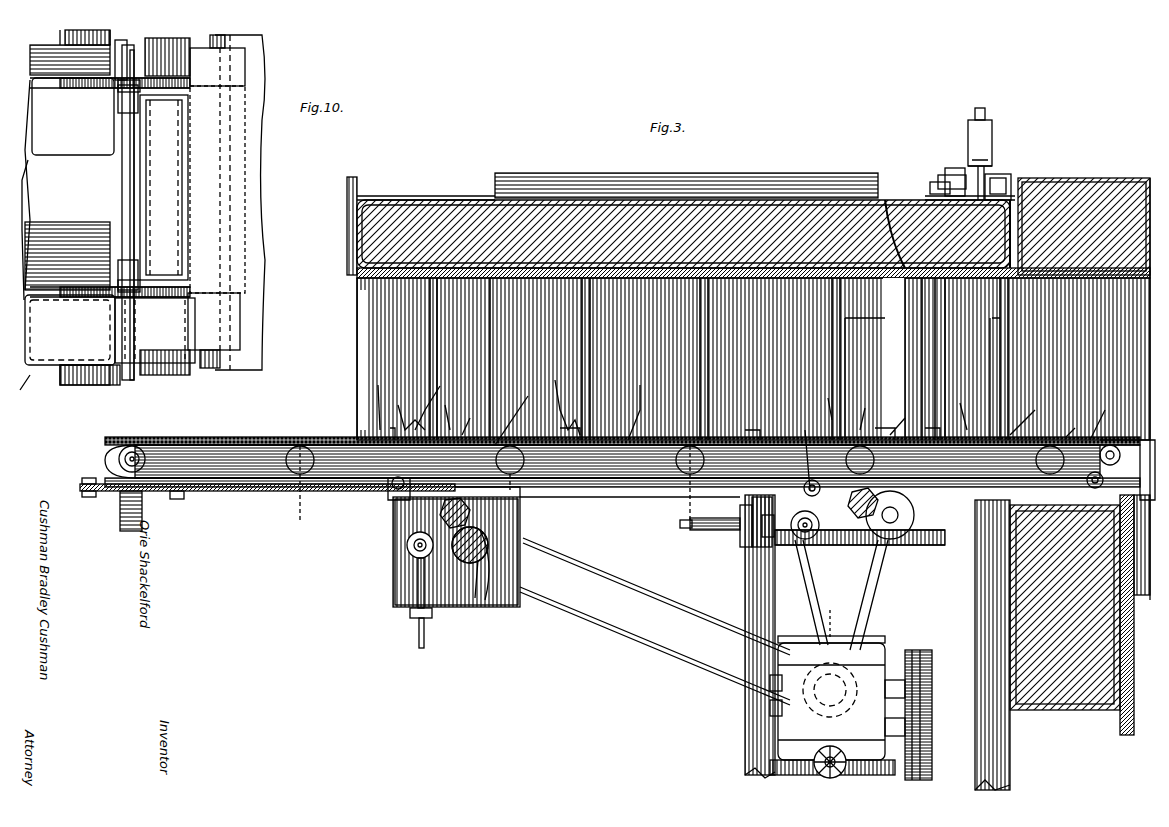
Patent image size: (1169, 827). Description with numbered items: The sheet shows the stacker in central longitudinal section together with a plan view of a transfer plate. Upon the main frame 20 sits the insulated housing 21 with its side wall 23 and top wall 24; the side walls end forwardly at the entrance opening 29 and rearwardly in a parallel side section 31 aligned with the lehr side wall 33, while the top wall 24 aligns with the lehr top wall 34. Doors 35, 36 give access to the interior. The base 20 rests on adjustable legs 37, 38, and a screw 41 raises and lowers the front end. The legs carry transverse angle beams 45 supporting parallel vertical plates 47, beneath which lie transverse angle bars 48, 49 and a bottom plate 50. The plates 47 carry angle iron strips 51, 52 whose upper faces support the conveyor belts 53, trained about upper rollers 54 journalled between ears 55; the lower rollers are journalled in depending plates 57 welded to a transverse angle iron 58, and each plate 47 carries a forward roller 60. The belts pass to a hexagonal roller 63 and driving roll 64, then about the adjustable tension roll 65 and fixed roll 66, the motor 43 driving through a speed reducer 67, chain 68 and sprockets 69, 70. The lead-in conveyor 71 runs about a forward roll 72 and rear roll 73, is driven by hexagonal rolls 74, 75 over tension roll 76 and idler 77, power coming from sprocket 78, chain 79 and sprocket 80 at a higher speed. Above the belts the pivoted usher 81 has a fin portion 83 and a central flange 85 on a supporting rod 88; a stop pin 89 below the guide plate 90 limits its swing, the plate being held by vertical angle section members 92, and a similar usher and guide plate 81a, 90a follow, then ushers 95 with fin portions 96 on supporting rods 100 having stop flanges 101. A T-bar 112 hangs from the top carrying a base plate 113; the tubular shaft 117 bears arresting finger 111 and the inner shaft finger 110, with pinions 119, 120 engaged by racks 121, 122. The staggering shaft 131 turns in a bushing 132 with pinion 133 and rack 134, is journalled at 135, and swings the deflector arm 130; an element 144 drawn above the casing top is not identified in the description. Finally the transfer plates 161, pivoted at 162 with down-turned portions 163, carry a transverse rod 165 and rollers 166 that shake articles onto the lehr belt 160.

In FIG. 3, the main frame 20 is at (275, 487).
In FIG. 3, the insulated housing 21 is at (390, 318).
In FIG. 3, the side wall 23 is at (770, 250).
In FIG. 3, the top wall 24 is at (440, 196).
In FIG. 3, the entrance opening 29 is at (357, 370).
In FIG. 3, the parallel side section 31 is at (905, 300).
In FIG. 3, the lehr side wall 33 is at (1085, 300).
In FIG. 3, the lehr top wall 34 is at (1080, 178).
In FIG. 3, the door 35 is at (636, 300).
In FIG. 3, the door 36 is at (860, 290).
In FIG. 3, the adjustable leg 37 is at (745, 715).
In FIG. 3, the adjustable leg 38 is at (1010, 755).
In FIG. 3, the screw 41 is at (145, 512).
In FIG. 3, the motor 43 is at (890, 650).
In FIG. 3, the transverse angle beam 45 is at (690, 522).
In FIG. 10, the vertical plate 47 is at (30, 230).
In FIG. 3, the vertical plate 47 is at (235, 487).
In FIG. 3, the transverse angle bar 48 is at (525, 515).
In FIG. 3, the transverse angle bar 49 is at (392, 492).
In FIG. 3, the bottom plate 50 is at (605, 497).
In FIG. 10, the angle iron strip 51 is at (45, 55).
In FIG. 10, the angle iron strip 52 is at (60, 145).
In FIG. 3, the angle iron strip 52 is at (262, 445).
In FIG. 3, the conveyor belt 53 is at (1103, 417).
In FIG. 10, the upper roller 54 is at (170, 220).
In FIG. 10, the ear 55 is at (150, 80).
In FIG. 3, the depending plate 57 is at (1100, 452).
In FIG. 10, the transverse angle iron 58 is at (90, 385).
In FIG. 3, the transverse angle iron 58 is at (1087, 478).
In FIG. 3, the roller 60 is at (757, 418).
In FIG. 3, the hexagonal roller 63 is at (880, 540).
In FIG. 3, the driving roll 64 is at (900, 540).
In FIG. 3, the tension roll 65 is at (803, 540).
In FIG. 3, the fixed roll 66 is at (808, 452).
In FIG. 3, the speed reducer 67 is at (890, 620).
In FIG. 3, the chain 68 is at (822, 600).
In FIG. 3, the sprocket 69 is at (839, 618).
In FIG. 3, the sprocket 70 is at (855, 520).
In FIG. 3, the lead-in conveyor 71 is at (225, 437).
In FIG. 3, the forward roll 72 is at (115, 452).
In FIG. 3, the rear roll 73 is at (518, 412).
In FIG. 3, the hexagonal roll 74 is at (478, 608).
In FIG. 3, the driving roll 75 is at (455, 608).
In FIG. 3, the tension roll 76 is at (405, 550).
In FIG. 3, the idler 77 is at (375, 490).
In FIG. 3, the sprocket 78 is at (730, 683).
In FIG. 3, the chain 79 is at (620, 630).
In FIG. 3, the sprocket 80 is at (488, 548).
In FIG. 3, the usher 81 is at (439, 400).
In FIG. 3, the usher 81a is at (562, 400).
In FIG. 3, the fin portion 83 is at (386, 400).
In FIG. 3, the central flange 85 is at (408, 409).
In FIG. 3, the supporting rod 88 is at (430, 346).
In FIG. 3, the stop pin 89 is at (453, 409).
In FIG. 3, the guide plate 90 is at (466, 419).
In FIG. 3, the guide plate 90a is at (641, 405).
In FIG. 3, the vertical angle section member 92 is at (492, 325).
In FIG. 3, the usher 95 is at (868, 411).
In FIG. 3, the fin portion 96 is at (828, 401).
In FIG. 3, the vertical supporting rod 100 is at (885, 357).
In FIG. 3, the stop flange 101 is at (900, 421).
In FIG. 3, the bottle arresting finger 110 is at (1000, 455).
In FIG. 3, the bottle arresting finger 111 is at (972, 409).
In FIG. 3, the T-bar 112 is at (930, 354).
In FIG. 3, the base plate 113 is at (960, 455).
In FIG. 3, the tubular shaft 117 is at (945, 358).
In FIG. 3, the pinion 119 is at (945, 180).
In FIG. 3, the pinion 120 is at (953, 175).
In FIG. 3, the rack 121 is at (962, 180).
In FIG. 3, the rack 122 is at (935, 185).
In FIG. 3, the deflector arm 130 is at (1080, 425).
In FIG. 3, the shaft 131 is at (1000, 370).
In FIG. 3, the bushing 132 is at (1012, 198).
In FIG. 3, the pinion 133 is at (1005, 190).
In FIG. 3, the rack 134 is at (1000, 180).
In FIG. 3, the lower journal 135 is at (1032, 415).
In FIG. 3, the valve 144 is at (985, 135).
In FIG. 10, the lehr belt 160 is at (262, 212).
In FIG. 3, the lehr belt 160 is at (1157, 432).
In FIG. 10, the transfer plate 161 is at (240, 60).
In FIG. 3, the transfer plate 161 is at (1145, 440).
In FIG. 10, the pivot 162 is at (190, 88).
In FIG. 10, the down-turned terminal portion 163 is at (175, 300).
In FIG. 10, the transverse rod 165 is at (135, 175).
In FIG. 10, the roller 166 is at (140, 110).